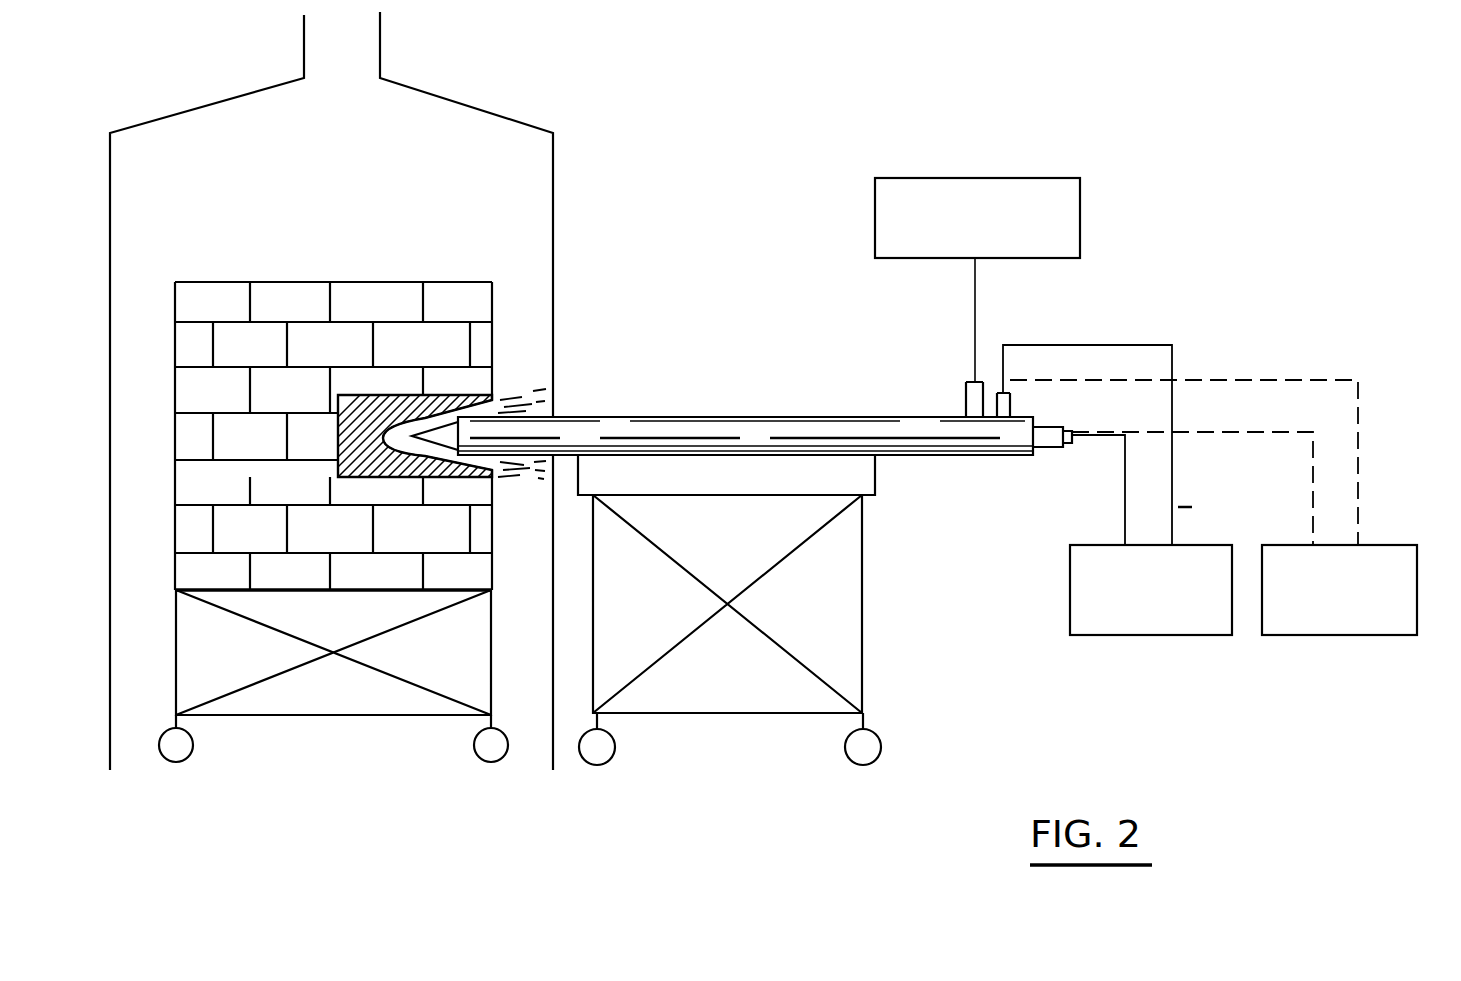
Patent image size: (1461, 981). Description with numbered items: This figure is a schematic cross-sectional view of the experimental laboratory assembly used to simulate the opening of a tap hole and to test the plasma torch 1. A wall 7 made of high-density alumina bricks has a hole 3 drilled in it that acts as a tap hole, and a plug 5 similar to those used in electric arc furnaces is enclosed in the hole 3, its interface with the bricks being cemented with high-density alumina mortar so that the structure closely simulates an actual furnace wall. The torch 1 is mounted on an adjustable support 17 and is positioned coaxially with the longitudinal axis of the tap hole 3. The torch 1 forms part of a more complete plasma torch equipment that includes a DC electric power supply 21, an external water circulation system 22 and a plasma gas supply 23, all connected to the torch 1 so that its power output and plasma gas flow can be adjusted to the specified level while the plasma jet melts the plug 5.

The plasma torch 1 is at (720, 416).
The hole 3 is at (491, 471).
The plug 5 is at (338, 437).
The wall 7 is at (492, 281).
The adjustable support 17 is at (863, 653).
The DC electric power supply 21 is at (1166, 635).
The external water circulation system 22 is at (1350, 635).
The plasma gas supply 23 is at (946, 178).